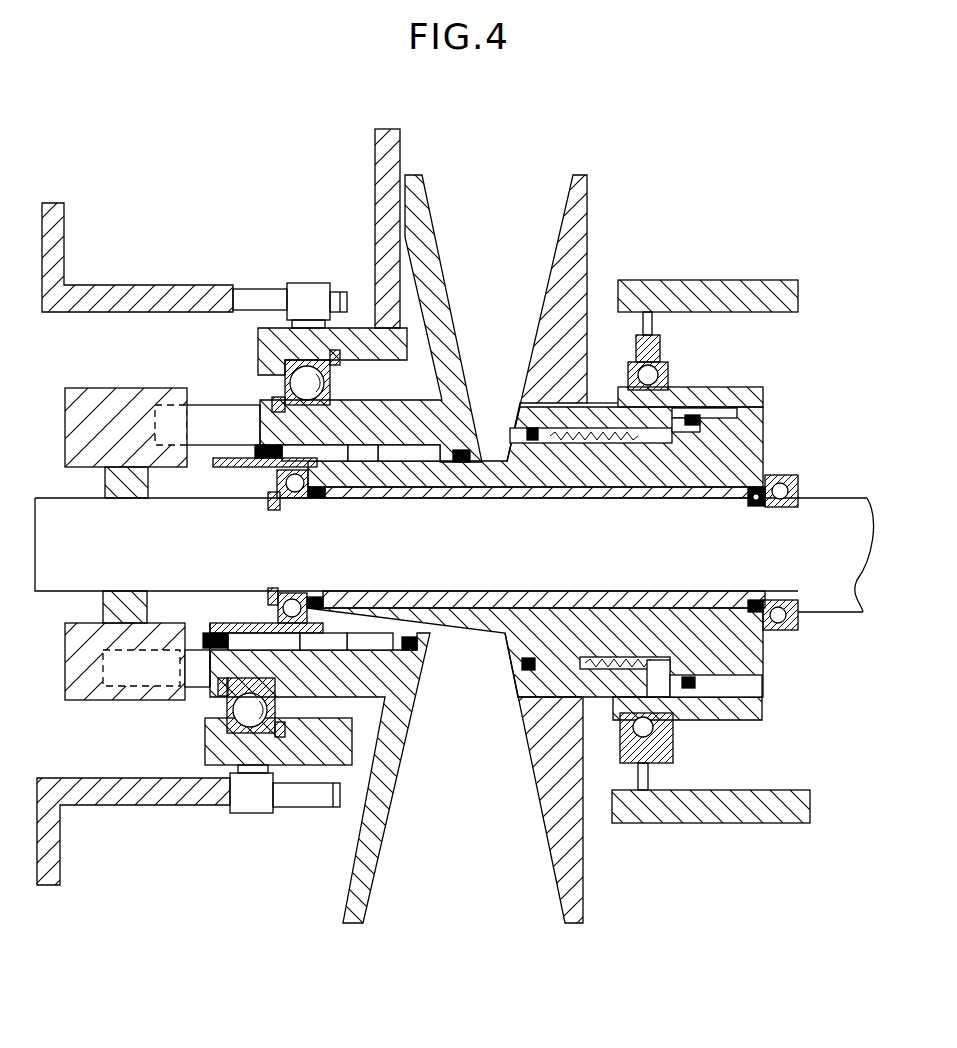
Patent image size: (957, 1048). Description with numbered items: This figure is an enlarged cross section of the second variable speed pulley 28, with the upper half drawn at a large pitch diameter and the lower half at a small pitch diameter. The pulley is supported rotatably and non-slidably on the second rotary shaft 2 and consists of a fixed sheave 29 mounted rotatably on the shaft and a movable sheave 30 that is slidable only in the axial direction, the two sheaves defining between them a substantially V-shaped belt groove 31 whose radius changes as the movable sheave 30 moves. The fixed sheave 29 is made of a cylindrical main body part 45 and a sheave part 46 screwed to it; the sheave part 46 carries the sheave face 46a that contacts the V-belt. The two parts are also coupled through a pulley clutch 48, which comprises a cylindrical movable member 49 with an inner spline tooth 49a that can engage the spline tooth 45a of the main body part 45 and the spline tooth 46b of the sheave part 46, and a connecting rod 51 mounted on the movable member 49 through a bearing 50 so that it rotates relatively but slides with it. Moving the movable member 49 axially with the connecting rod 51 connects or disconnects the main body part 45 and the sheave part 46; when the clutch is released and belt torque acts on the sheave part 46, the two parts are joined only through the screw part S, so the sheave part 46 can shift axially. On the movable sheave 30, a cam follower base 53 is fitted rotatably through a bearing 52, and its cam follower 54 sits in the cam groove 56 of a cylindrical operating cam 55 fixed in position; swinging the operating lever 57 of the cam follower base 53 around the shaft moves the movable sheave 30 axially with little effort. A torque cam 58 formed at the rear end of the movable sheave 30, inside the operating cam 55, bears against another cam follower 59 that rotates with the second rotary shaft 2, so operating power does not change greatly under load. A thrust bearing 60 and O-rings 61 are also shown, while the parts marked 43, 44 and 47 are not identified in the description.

The second rotary shaft 2 is at (845, 612).
The second variable speed pulley 28 is at (621, 257).
The fixed sheave 29 is at (524, 355).
The movable sheave 30 is at (445, 280).
The belt groove 31 is at (510, 237).
The sleeve 43 is at (315, 497).
The collar 44 is at (545, 500).
The cylindrical main body part 45 is at (765, 440).
The spline tooth 45a is at (750, 720).
The sheave part 46 is at (588, 212).
The sheave face 46a is at (558, 240).
The spline tooth 46b is at (688, 697).
The sleeve portion 47 is at (367, 461).
The pulley clutch 48 is at (814, 310).
The cylindrical movable member 49 is at (762, 388).
The spline tooth 49a is at (740, 683).
The bearing 50 is at (662, 382).
The connecting rod 51 is at (748, 280).
The bearing 52 is at (330, 383).
The cam follower base 53 is at (262, 352).
The cam follower 54 is at (308, 283).
The cylindrical operating cam 55 is at (130, 287).
The cam groove 56 is at (257, 292).
The operating lever 57 is at (400, 150).
The torque cam 58 is at (218, 412).
The cam follower 59 is at (122, 388).
The thrust bearing 60 is at (277, 480).
The O-ring 61 is at (255, 452).
The screw part S is at (600, 425).